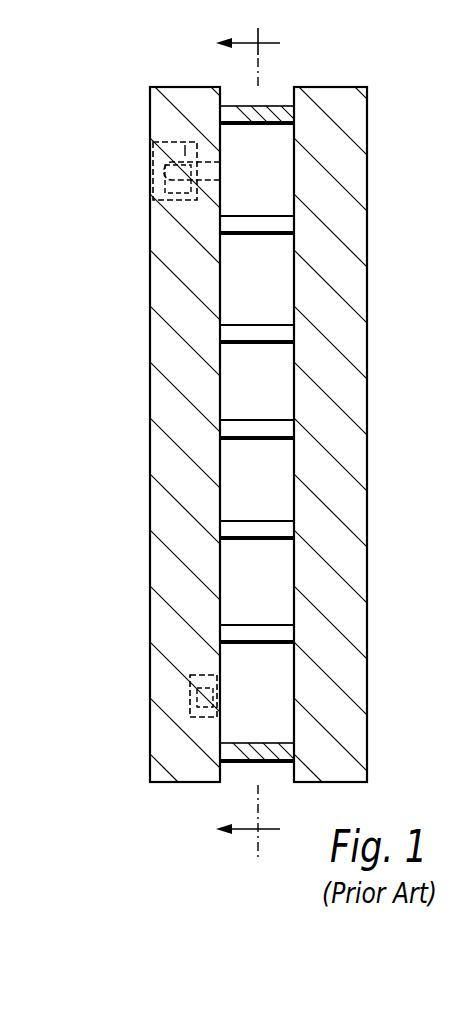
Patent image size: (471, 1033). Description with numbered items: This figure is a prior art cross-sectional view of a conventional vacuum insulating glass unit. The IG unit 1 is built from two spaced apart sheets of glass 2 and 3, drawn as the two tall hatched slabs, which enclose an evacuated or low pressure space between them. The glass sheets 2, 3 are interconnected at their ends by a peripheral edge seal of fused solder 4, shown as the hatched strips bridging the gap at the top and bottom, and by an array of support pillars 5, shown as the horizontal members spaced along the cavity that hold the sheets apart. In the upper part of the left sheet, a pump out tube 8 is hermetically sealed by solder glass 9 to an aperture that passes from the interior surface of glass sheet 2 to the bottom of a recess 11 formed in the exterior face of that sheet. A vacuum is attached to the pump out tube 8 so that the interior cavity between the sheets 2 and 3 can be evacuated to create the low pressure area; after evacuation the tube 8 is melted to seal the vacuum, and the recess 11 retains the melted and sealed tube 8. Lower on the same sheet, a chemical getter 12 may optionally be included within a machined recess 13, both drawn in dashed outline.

The IG unit 1 is at (235, 516).
The sheet of glass 2 is at (161, 506).
The sheet of glass 3 is at (338, 330).
The peripheral edge seal of fused solder 4 is at (267, 118).
The array of support pillars 5 is at (258, 428).
The pump out tube 8 is at (162, 170).
The solder glass 9 is at (185, 150).
The recess 11 is at (175, 192).
The chemical getter 12 is at (205, 693).
The machined recess 13 is at (193, 730).